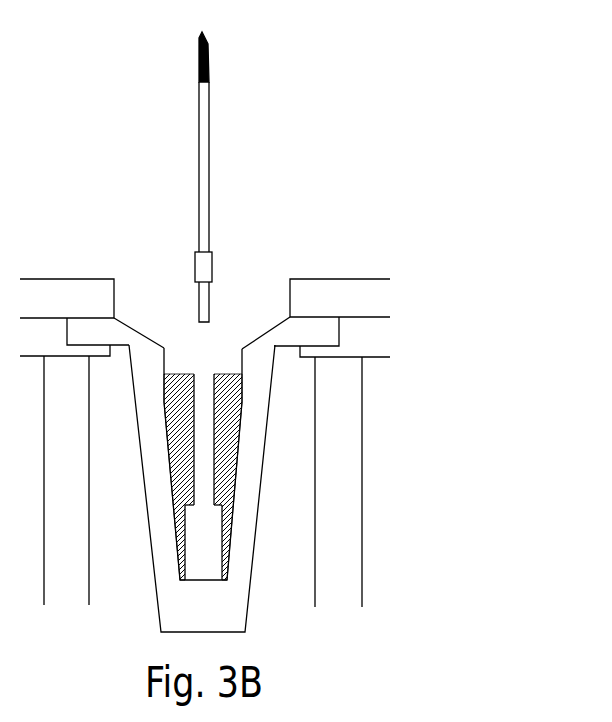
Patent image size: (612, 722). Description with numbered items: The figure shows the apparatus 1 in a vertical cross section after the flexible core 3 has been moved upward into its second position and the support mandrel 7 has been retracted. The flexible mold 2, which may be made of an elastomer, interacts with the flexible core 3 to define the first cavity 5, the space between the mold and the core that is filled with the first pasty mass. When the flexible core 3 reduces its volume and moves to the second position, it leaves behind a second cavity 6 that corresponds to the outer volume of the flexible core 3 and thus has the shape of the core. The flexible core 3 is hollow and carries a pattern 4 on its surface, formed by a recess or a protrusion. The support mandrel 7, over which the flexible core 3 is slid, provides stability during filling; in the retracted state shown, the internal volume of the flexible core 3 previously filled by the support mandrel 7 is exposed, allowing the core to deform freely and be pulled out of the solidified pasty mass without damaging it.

The apparatus 1 is at (416, 263).
The flexible mold 2 is at (170, 590).
The flexible core 3 is at (207, 118).
The pattern 4 is at (193, 265).
The first cavity 5 is at (223, 432).
The second cavity 6 is at (203, 477).
The support mandrel 7 is at (207, 49).